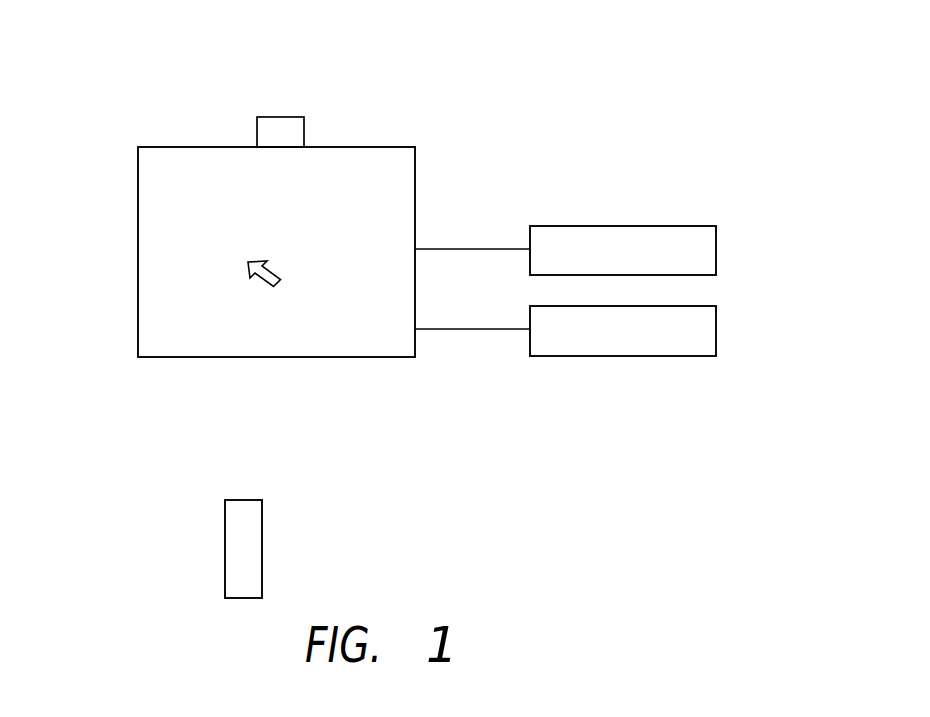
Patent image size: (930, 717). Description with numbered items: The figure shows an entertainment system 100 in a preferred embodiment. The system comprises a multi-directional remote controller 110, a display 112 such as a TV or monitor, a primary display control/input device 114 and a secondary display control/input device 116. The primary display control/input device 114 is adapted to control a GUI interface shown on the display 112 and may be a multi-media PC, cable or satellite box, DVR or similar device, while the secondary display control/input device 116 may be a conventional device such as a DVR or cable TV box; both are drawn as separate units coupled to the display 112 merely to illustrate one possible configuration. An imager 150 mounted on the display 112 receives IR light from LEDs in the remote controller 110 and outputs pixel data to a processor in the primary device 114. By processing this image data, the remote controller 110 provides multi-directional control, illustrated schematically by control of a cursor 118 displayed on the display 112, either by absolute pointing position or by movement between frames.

The entertainment system 100 is at (614, 155).
The multi-directional remote controller 110 is at (262, 509).
The display 112 is at (325, 147).
The primary display control/input device 114 is at (717, 238).
The secondary display control/input device 116 is at (717, 328).
The cursor 118 is at (273, 271).
The imager 150 is at (272, 116).